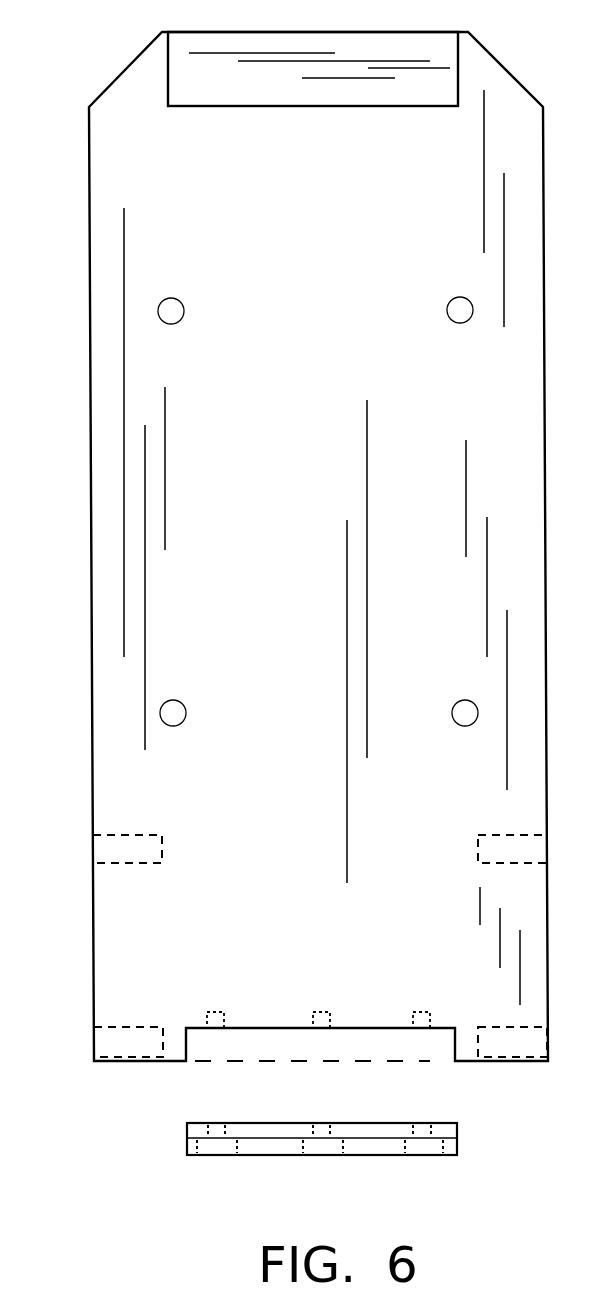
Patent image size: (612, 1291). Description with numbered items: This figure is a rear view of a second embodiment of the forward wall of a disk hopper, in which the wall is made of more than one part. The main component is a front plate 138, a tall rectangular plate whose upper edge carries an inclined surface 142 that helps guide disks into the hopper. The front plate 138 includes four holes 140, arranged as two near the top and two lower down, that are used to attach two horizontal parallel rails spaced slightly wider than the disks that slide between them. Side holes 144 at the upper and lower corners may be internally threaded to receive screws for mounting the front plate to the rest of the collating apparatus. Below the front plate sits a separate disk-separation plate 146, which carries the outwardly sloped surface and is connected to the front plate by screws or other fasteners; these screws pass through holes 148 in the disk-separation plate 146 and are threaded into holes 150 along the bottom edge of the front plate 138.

The front plate 138 is at (120, 551).
The holes 140 is at (160, 309).
The inclined surface 142 is at (278, 97).
The side holes 144 is at (118, 862).
The disk-separation plate 146 is at (193, 1128).
The holes 148 is at (215, 1145).
The holes 150 is at (214, 1012).